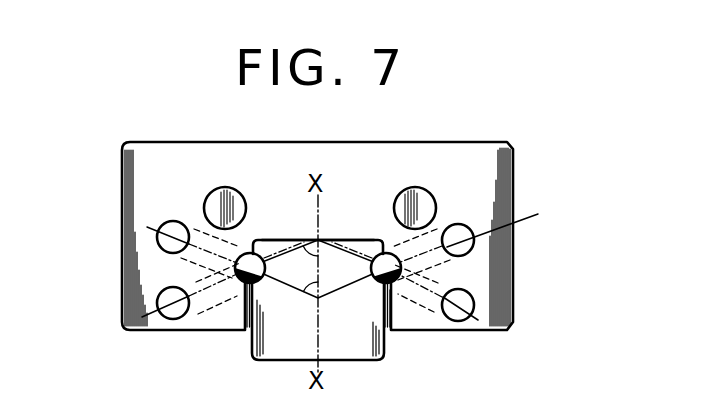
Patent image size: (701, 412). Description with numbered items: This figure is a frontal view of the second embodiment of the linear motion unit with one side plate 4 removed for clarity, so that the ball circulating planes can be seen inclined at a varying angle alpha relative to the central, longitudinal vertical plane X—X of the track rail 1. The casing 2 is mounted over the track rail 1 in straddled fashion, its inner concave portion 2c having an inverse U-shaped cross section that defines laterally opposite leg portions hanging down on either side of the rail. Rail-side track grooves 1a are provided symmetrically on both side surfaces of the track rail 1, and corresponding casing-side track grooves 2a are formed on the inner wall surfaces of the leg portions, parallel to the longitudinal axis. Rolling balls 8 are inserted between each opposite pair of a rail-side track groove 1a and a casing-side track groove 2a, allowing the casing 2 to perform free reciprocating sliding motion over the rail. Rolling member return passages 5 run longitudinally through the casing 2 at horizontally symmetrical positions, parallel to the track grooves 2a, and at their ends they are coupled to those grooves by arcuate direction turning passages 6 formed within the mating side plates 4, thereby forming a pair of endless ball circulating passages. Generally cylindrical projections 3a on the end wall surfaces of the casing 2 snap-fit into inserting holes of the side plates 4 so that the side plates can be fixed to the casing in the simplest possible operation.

The track rail 1 is at (334, 342).
The rail-side track groove 1a is at (377, 272).
The casing 2 is at (282, 188).
The casing-side track groove 2a is at (238, 258).
The inner concave portion 2c is at (336, 241).
The cylindrical projection 3a is at (402, 192).
The side plate 4 is at (503, 273).
The rolling member return passage 5 is at (502, 226).
The direction turning passage 6 is at (429, 307).
The rolling ball 8 is at (328, 325).